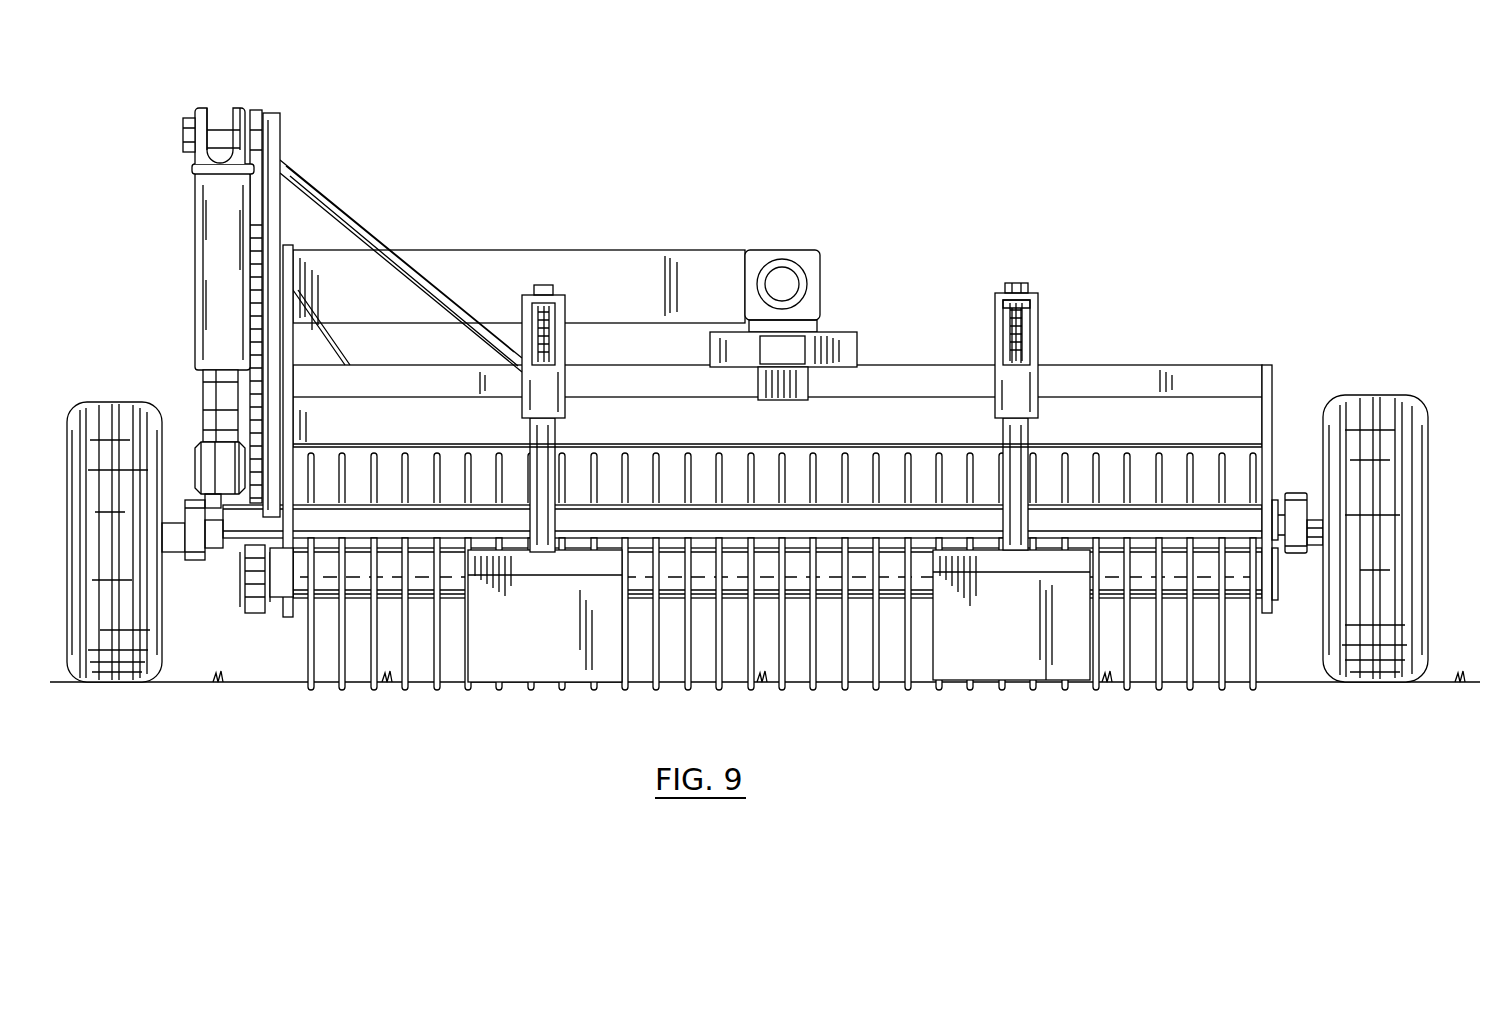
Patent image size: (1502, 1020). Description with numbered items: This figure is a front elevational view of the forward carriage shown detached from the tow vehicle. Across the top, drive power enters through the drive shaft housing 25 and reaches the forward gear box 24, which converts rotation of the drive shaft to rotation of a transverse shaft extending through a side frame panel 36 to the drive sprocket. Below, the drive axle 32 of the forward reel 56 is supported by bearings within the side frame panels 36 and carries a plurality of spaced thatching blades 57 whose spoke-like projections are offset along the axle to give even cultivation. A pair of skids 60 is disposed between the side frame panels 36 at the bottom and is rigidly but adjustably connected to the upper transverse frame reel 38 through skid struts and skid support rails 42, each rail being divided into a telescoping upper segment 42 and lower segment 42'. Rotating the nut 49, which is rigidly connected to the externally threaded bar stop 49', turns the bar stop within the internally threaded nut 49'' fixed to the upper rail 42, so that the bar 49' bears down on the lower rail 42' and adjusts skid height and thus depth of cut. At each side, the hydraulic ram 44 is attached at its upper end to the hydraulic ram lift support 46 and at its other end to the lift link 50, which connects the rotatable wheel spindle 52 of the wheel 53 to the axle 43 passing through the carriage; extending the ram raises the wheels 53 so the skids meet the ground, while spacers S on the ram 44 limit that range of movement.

The forward gear box 24 is at (760, 258).
The drive shaft housing 25 is at (603, 268).
The drive axle 32 is at (1143, 592).
The side frame panel 36 is at (1276, 392).
The upper transverse frame reel 38 is at (1163, 380).
The skid support rail 42 is at (816, 351).
The lower skid support rail 42' is at (837, 475).
The axle 43 is at (1198, 507).
The hydraulic ram 44 is at (197, 300).
The hydraulic ram lift support 46 is at (182, 140).
The nut 49 is at (1049, 264).
The bar stop 49' is at (978, 335).
The nut 49'' is at (1062, 290).
The lift link 50 is at (1300, 556).
The wheel spindle 52 is at (1306, 520).
The wheel 53 is at (98, 683).
The forward reel 56 is at (782, 638).
The thatching blade 57 is at (777, 697).
The skid 60 is at (551, 697).
The spacer S is at (206, 406).